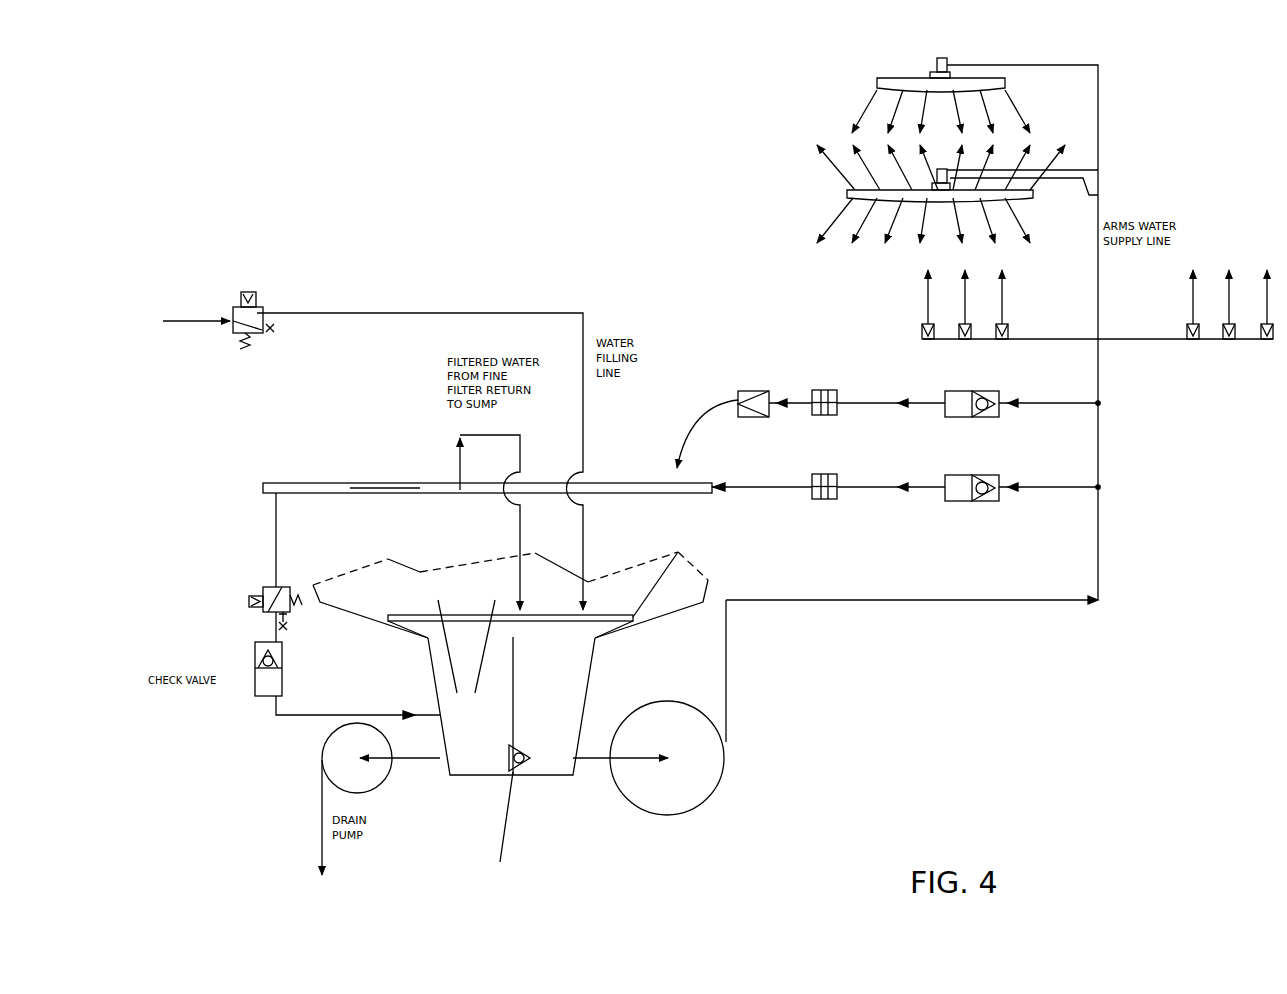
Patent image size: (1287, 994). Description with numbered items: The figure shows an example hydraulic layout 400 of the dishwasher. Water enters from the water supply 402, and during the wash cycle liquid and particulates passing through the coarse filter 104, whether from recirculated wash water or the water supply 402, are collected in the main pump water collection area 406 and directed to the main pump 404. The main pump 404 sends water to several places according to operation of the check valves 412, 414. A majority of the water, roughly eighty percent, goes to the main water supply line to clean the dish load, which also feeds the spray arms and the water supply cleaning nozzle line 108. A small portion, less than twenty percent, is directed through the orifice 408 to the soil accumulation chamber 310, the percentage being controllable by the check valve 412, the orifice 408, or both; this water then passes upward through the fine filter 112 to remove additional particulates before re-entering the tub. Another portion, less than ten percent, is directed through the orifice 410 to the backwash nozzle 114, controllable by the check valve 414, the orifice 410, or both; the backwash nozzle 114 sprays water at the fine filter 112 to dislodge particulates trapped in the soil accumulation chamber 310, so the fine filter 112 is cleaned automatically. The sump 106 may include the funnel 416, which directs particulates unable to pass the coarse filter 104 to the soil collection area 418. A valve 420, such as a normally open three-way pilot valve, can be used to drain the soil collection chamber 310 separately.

The hydraulic layout 400 is at (408, 128).
The water supply 402 is at (153, 322).
The coarse filter 104 is at (682, 551).
The sump 106 is at (595, 665).
The water supply cleaning nozzle line 108 is at (1130, 340).
The fine filter 112 is at (338, 483).
The backwash nozzle 114 is at (752, 391).
The soil accumulation chamber 310 is at (370, 490).
The main pump 404 is at (687, 794).
The main pump water collection area 406 is at (547, 737).
The orifice 408 is at (838, 480).
The orifice 410 is at (838, 397).
The check valve 412 is at (960, 475).
The check valve 414 is at (960, 391).
The funnel 416 is at (487, 637).
The soil collection area 418 is at (478, 758).
The valve 420 is at (268, 587).